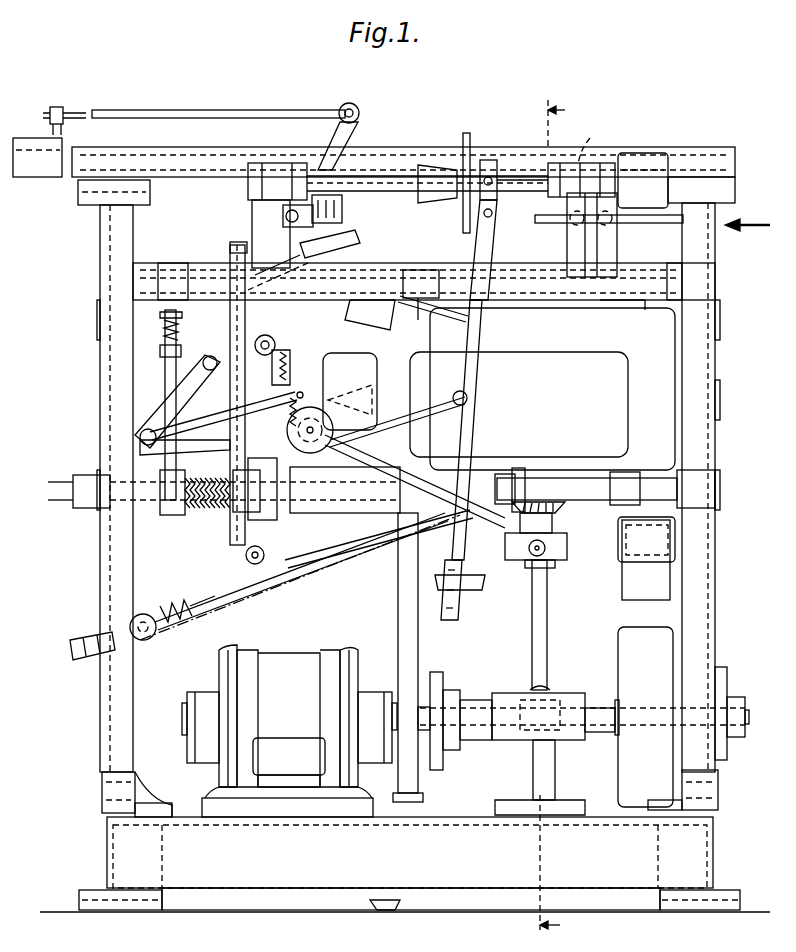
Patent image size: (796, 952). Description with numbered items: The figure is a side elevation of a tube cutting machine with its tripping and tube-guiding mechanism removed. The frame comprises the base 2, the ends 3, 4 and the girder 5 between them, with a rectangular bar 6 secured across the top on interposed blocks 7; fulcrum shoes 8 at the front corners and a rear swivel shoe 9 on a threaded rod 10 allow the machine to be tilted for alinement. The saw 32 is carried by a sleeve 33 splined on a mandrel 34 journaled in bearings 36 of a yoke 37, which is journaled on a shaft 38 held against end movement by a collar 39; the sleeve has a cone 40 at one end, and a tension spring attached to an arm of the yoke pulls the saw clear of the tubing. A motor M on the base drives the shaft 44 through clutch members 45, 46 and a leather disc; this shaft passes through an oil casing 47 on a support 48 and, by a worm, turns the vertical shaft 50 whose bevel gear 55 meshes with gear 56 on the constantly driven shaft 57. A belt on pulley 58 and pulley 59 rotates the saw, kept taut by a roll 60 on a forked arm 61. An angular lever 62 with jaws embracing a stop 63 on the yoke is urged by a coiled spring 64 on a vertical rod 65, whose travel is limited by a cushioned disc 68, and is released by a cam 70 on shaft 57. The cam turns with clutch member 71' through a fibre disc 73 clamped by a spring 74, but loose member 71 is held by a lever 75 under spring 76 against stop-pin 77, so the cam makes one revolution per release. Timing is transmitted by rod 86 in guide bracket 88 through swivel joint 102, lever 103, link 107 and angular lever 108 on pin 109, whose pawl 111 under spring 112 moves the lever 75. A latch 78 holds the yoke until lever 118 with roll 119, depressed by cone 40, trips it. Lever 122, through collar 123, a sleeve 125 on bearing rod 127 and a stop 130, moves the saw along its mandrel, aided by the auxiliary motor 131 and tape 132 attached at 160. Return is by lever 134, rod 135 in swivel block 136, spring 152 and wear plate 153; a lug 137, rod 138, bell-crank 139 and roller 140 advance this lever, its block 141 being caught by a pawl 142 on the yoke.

The base 2 is at (410, 519).
The frame end 3 is at (108, 385).
The frame end 4 is at (715, 366).
The girder 5 is at (598, 345).
The bar 6 is at (160, 158).
The blocks 7 is at (80, 185).
The fulcrum shoes 8 is at (85, 888).
The swivel shoe 9 is at (390, 908).
The rod 10 is at (398, 632).
The saw 32 is at (467, 140).
The sleeve 33 is at (492, 160).
The mandrel 34 is at (470, 172).
The bearings 36 is at (258, 165).
The yoke 37 is at (252, 218).
The shaft 38 is at (650, 263).
The collar 39 is at (636, 304).
The cone 40 is at (437, 165).
The shaft 44 is at (610, 735).
The clutch member 45 is at (428, 760).
The clutch member 46 is at (448, 745).
The oil casing 47 is at (520, 742).
The support 48 is at (530, 790).
The vertical shaft 50 is at (548, 633).
The bevel gear 55 is at (548, 478).
The bevel gear 56 is at (528, 470).
The shaft 57 is at (580, 490).
The pulley 58 is at (665, 652).
The pulley 59 is at (648, 153).
The roll 60 is at (645, 598).
The forked arm 61 is at (660, 540).
The angular lever 62 is at (230, 340).
The stop projection 63 is at (230, 247).
The coiled spring 64 is at (163, 342).
The vertical rod 65 is at (168, 360).
The disc 68 is at (105, 510).
The cam 70 is at (245, 540).
The loose clutch member 71 is at (323, 511).
The clutch member 71' is at (379, 539).
The fibre disc 73 is at (310, 570).
The spring 74 is at (172, 516).
The lever 75 is at (288, 420).
The spring 76 is at (303, 400).
The stop-pin 77 is at (285, 438).
The latch 78 is at (279, 271).
The rod 86 is at (272, 112).
The guide bracket 88 is at (58, 107).
The swivel joint 102 is at (356, 106).
The lever 103 is at (355, 135).
The link 107 is at (360, 240).
The angular lever 108 is at (245, 318).
The pin 109 is at (275, 340).
The pawl 111 is at (288, 362).
The spring 112 is at (290, 350).
The lever 118 is at (283, 208).
The roll 119 is at (342, 212).
The lever 122 is at (485, 343).
The collar 123 is at (500, 167).
The sleeve 125 is at (468, 600).
The bearing rod 127 is at (470, 595).
The stop 130 is at (540, 218).
The auxiliary motor 131 is at (350, 391).
The tape 132 is at (350, 403).
The lever 134 is at (470, 366).
The rod 135 is at (215, 608).
The swivel block 136 is at (152, 640).
The arm 137 is at (495, 565).
The rod 138 is at (380, 462).
The bell-crank lever 139 is at (175, 375).
The roller 140 is at (185, 431).
The block 141 is at (424, 295).
The pawl 142 is at (385, 322).
The coiled spring 152 is at (173, 598).
The wear plate 153 is at (470, 318).
The tape attachment point 160 is at (470, 398).
The motor M is at (289, 731).